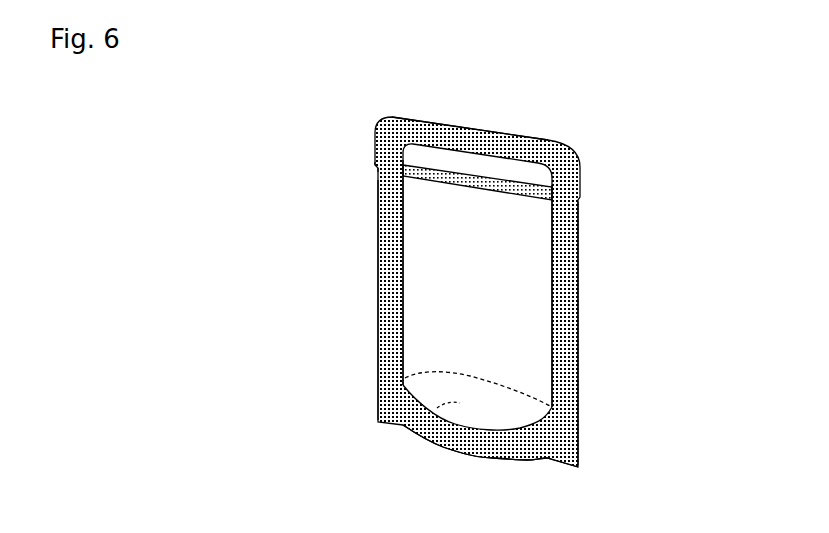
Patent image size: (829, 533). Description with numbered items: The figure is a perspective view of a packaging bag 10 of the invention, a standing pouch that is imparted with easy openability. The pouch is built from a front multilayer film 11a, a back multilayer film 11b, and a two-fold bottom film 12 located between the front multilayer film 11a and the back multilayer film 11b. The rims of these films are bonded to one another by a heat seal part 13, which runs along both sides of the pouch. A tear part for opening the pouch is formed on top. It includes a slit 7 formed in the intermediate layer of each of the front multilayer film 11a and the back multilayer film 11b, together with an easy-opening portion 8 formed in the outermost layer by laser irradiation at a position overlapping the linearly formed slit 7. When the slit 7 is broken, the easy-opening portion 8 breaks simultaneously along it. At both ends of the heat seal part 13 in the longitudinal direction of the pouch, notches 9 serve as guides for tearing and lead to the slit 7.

The slit 7 is at (456, 120).
The easy-opening portion 8 is at (523, 185).
The notch 9 is at (376, 165).
The packaging bag 10 is at (607, 150).
The front multilayer film 11a is at (428, 322).
The back multilayer film 11b is at (525, 262).
The bottom film 12 is at (413, 437).
The heat seal part 13 is at (378, 228).